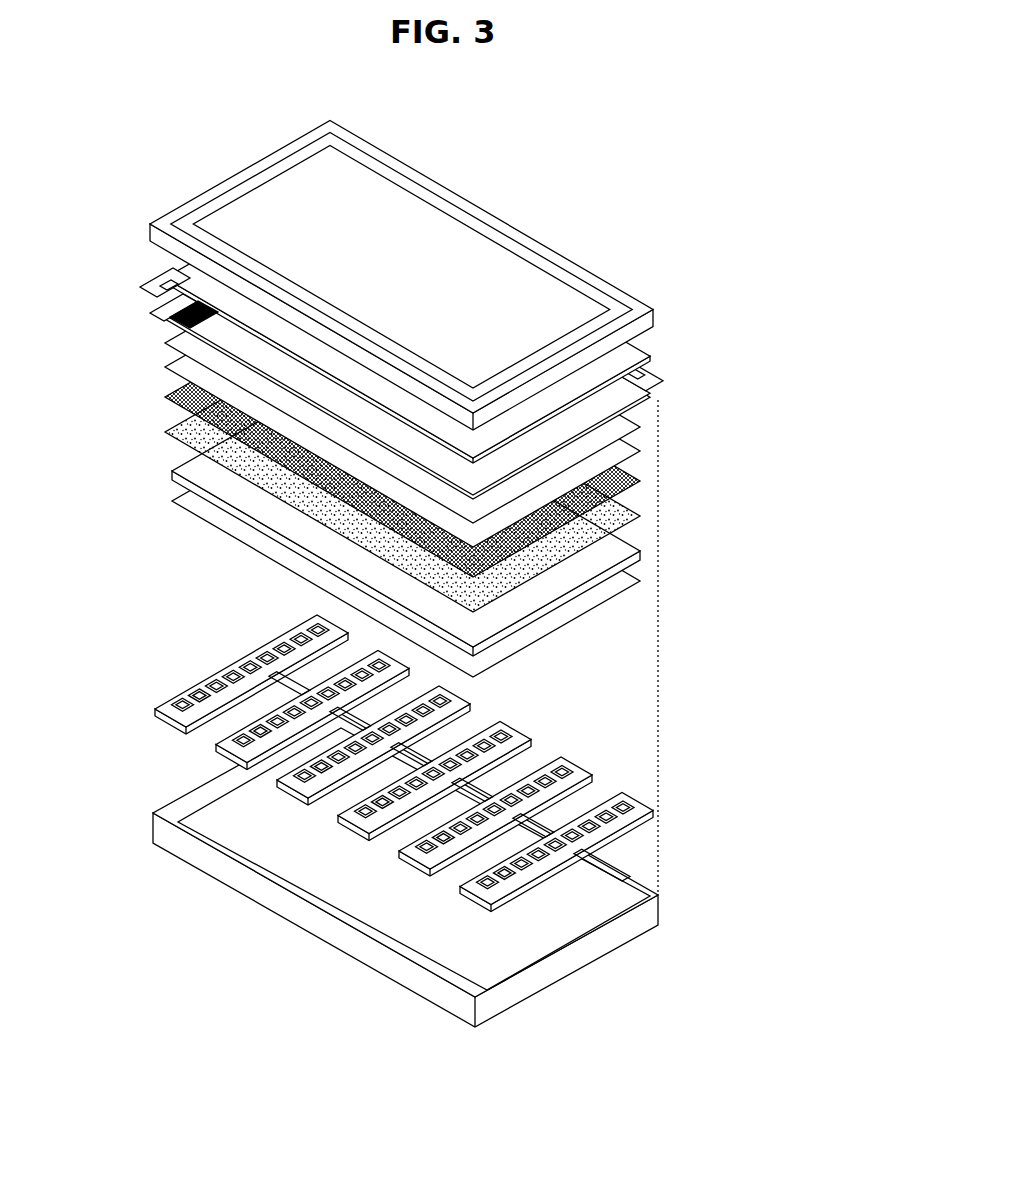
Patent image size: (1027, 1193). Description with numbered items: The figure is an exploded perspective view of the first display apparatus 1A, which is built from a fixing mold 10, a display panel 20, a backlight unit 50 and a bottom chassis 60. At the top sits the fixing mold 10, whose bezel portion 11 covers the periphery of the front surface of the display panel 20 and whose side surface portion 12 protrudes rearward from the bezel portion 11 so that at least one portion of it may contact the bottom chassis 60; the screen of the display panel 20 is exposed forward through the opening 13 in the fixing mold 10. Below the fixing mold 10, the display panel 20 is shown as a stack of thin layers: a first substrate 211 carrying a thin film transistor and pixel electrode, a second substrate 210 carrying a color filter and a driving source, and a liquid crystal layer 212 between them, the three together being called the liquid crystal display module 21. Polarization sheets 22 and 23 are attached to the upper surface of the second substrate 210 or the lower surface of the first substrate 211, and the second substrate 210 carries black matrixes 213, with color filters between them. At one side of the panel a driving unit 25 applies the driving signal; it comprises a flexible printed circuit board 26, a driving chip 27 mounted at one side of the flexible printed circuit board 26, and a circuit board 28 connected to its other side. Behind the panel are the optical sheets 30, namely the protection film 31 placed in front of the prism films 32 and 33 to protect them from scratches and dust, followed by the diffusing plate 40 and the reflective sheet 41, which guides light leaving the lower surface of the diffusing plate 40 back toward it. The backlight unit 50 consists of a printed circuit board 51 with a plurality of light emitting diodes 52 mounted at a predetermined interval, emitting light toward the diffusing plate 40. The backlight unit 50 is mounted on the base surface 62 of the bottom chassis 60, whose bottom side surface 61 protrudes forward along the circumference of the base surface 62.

The first display apparatus 1A is at (656, 173).
The fixing mold 10 is at (452, 276).
The bezel portion 11 is at (637, 291).
The side surface portion 12 is at (638, 326).
The opening 13 is at (383, 242).
The display panel 20 is at (435, 394).
The liquid crystal display module 21 is at (481, 356).
The second substrate 210 is at (645, 390).
The first substrate 211 is at (627, 410).
The liquid crystal layer 212 is at (640, 396).
The black matrix 213 is at (185, 326).
The polarization sheet 22 is at (627, 358).
The polarization sheet 23 is at (632, 438).
The driving unit 25 is at (108, 296).
The flexible printed circuit board 26 is at (156, 312).
The driving chip 27 is at (162, 287).
The circuit board 28 is at (143, 288).
The optical sheets 30 is at (467, 441).
The protection film 31 is at (642, 457).
The prism film 32 is at (638, 486).
The prism film 33 is at (638, 521).
The diffusing plate 40 is at (612, 582).
The reflective sheet 41 is at (600, 605).
The backlight unit 50 is at (437, 742).
The printed circuit board 51 is at (208, 677).
The light emitting diode 52 is at (291, 643).
The bottom chassis 60 is at (455, 869).
The bottom side surface 61 is at (648, 938).
The base surface 62 is at (590, 894).